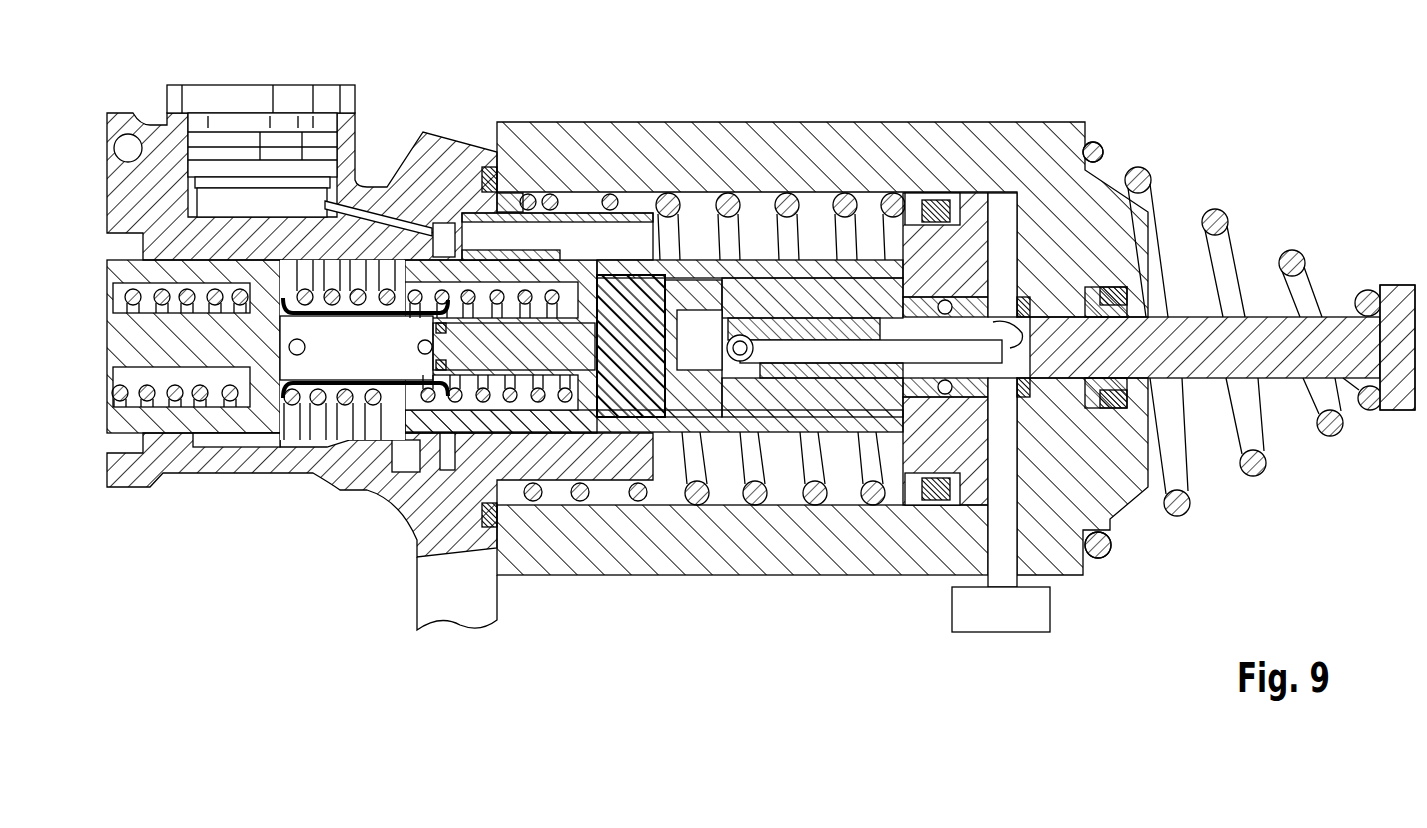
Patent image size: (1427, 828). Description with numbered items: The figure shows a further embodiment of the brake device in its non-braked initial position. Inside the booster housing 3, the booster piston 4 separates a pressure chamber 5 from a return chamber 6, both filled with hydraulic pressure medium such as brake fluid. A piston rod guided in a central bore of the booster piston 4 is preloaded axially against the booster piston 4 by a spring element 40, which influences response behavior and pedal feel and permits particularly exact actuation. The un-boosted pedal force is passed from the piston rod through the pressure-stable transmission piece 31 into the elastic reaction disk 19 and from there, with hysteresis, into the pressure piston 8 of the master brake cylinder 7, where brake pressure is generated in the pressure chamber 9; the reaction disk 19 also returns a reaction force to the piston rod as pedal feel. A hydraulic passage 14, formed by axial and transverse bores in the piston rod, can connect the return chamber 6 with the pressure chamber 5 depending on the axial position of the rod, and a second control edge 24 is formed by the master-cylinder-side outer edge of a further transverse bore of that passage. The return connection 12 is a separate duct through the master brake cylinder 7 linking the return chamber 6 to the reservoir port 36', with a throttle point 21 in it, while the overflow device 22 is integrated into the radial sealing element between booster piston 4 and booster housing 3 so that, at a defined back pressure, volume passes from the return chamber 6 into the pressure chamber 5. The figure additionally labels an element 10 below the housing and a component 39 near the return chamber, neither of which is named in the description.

The booster housing 3 is at (737, 540).
The booster piston 4 is at (922, 438).
The pressure chamber 5 is at (1000, 237).
The return chamber 6 is at (815, 222).
The master brake cylinder 7 is at (360, 230).
The pressure piston 8 is at (487, 422).
The pressure chamber 9 is at (302, 418).
The actuator 10 is at (1013, 636).
The return connection 12 is at (587, 237).
The hydraulic passage 14 is at (990, 300).
The reaction disk 19 is at (625, 360).
The throttle point 21 is at (468, 200).
The overflow device 22 is at (932, 200).
The second control edge 24 is at (970, 225).
The transmission piece 31 is at (690, 353).
The reservoir port 36' is at (261, 122).
The spring chamber 39 is at (727, 185).
The spring element 40 is at (1293, 262).